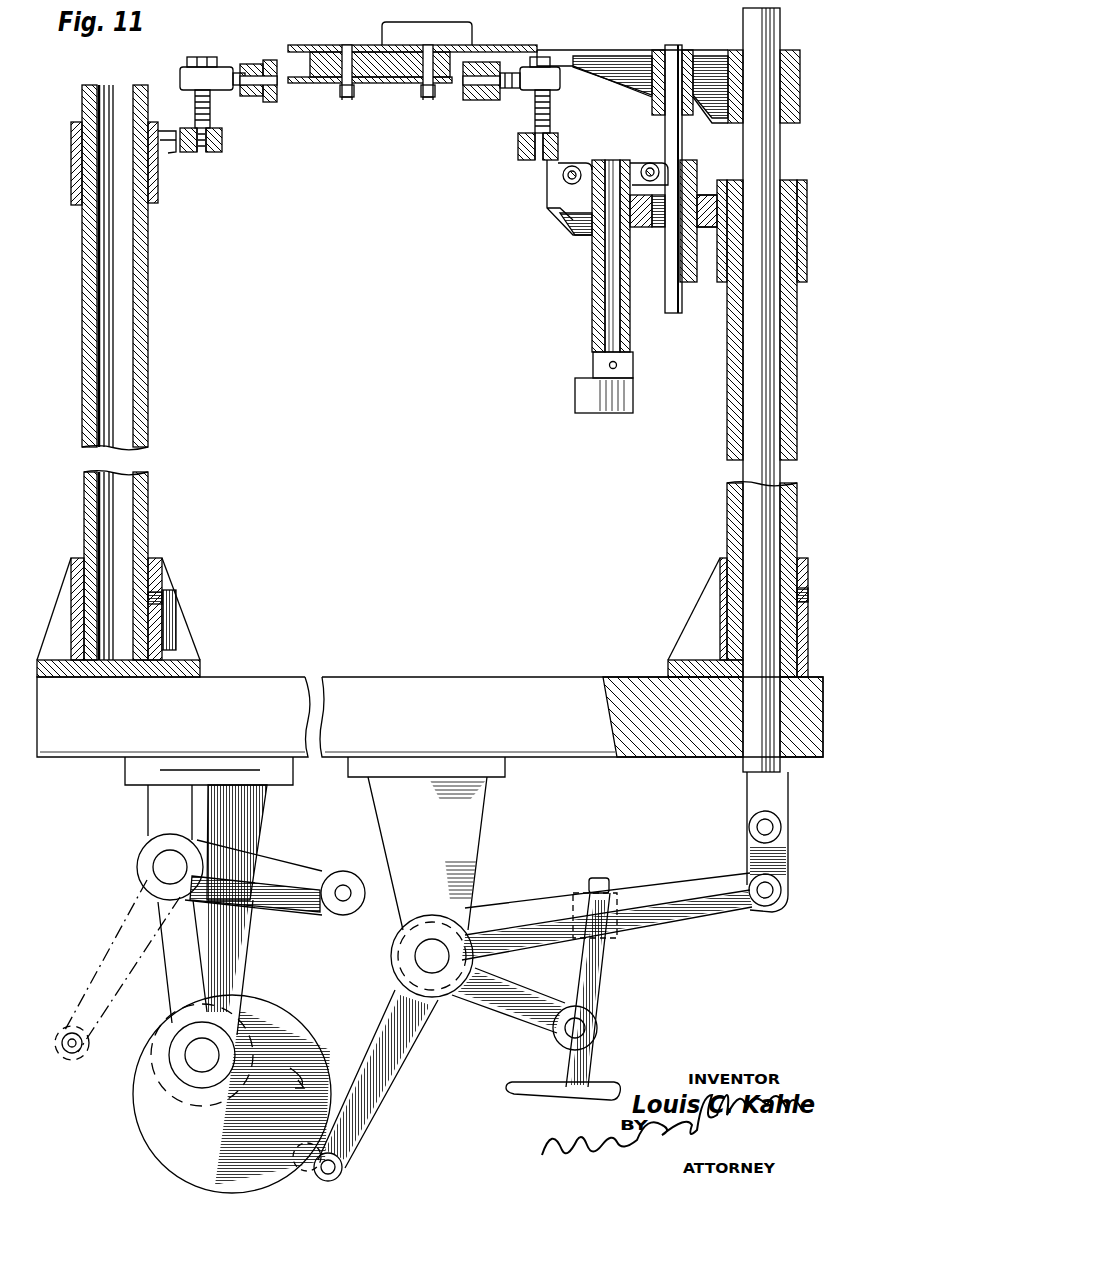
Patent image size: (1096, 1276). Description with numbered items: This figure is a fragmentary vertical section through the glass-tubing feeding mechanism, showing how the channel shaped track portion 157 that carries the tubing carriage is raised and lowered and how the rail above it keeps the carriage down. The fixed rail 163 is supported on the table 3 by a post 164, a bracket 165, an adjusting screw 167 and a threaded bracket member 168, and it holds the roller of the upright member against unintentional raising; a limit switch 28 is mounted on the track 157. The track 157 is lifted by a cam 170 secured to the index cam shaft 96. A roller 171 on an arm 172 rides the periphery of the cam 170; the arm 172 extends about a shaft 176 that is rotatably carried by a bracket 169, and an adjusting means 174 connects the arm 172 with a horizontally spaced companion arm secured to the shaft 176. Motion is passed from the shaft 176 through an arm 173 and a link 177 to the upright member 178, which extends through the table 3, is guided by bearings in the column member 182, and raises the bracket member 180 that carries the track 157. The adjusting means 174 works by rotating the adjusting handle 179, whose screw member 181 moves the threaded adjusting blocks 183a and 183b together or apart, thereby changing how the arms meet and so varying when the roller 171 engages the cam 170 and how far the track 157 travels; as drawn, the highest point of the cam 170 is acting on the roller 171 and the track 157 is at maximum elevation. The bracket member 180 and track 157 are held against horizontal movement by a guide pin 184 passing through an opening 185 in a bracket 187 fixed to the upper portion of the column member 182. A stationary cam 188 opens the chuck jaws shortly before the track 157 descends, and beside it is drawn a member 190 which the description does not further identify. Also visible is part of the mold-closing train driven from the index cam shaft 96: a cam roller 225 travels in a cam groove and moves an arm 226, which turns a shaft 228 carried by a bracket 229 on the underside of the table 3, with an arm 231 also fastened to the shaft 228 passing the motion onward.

The table 3 is at (396, 677).
The limit switch 28 is at (460, 31).
The index cam shaft 96 is at (208, 1068).
The channel shaped track portion 157 is at (326, 36).
The fixed rail 163 is at (275, 98).
The post 164 is at (150, 335).
The bracket 165 is at (167, 150).
The adjusting screw 167 is at (213, 107).
The threaded bracket member 168 is at (183, 77).
The bracket 169 is at (458, 870).
The cam 170 is at (142, 1122).
The roller 171 is at (345, 1168).
The arm 172 is at (472, 1005).
The arm 173 is at (740, 915).
The adjusting means 174 is at (611, 991).
The shaft 176 is at (426, 945).
The link 177 is at (748, 850).
The upright member 178 is at (752, 433).
The adjusting handle 179 is at (520, 1092).
The bracket member 180 is at (622, 40).
The screw member 181 is at (596, 976).
The column member 182 is at (730, 372).
The threaded adjusting block 183a is at (600, 1025).
The threaded adjusting block 183b is at (567, 905).
The guide pin 184 is at (672, 318).
The opening 185 is at (688, 186).
The bracket 187 is at (572, 222).
The stationary cam 188 is at (577, 395).
The post 190 is at (606, 338).
The cam roller 225 is at (70, 1060).
The arm 226 is at (102, 935).
The shaft 228 is at (153, 861).
The bracket 229 is at (150, 808).
The arm 231 is at (312, 848).